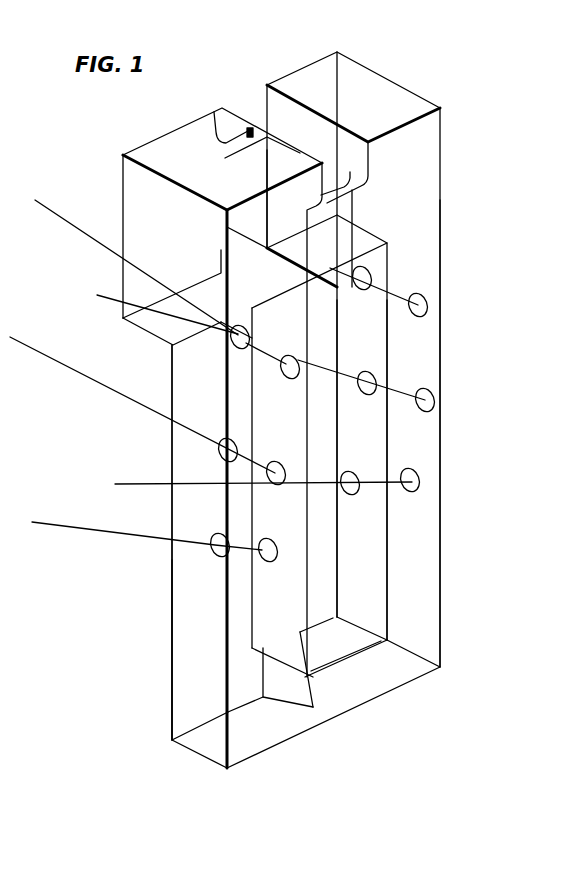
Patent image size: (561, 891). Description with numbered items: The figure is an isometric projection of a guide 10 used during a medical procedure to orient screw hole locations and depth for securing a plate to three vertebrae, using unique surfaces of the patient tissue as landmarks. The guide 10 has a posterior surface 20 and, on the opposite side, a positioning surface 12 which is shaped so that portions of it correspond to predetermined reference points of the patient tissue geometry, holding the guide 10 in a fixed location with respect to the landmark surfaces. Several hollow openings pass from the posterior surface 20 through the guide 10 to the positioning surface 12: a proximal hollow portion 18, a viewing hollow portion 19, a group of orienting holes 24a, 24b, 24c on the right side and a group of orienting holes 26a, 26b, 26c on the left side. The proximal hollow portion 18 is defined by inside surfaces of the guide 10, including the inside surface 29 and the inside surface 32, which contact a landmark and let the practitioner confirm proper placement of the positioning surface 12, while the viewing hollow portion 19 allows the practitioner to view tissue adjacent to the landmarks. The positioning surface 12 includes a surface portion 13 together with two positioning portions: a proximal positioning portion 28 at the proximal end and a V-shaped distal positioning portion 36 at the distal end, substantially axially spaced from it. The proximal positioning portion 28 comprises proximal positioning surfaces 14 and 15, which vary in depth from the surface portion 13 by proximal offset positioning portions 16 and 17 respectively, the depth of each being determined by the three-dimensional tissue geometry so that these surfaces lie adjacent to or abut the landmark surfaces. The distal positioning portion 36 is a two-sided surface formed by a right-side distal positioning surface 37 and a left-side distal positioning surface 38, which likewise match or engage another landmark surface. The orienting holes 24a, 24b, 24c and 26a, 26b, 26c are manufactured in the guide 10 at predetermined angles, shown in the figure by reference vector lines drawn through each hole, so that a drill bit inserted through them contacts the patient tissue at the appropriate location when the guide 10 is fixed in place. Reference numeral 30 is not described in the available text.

The guide 10 is at (453, 171).
The positioning surface 12 is at (103, 273).
The surface portion 13 is at (338, 432).
The proximal positioning surface 14 is at (130, 227).
The proximal positioning surface 15 is at (327, 92).
The proximal offset positioning portion 16 is at (150, 337).
The proximal offset positioning portion 17 is at (373, 238).
The proximal hollow portion 18 is at (350, 214).
The viewing hollow portion 19 is at (384, 438).
The posterior surface 20 is at (433, 232).
The orienting hole 24a is at (428, 302).
The orienting hole 24b is at (435, 399).
The orienting hole 24c is at (420, 478).
The orienting hole 26a is at (289, 380).
The orienting hole 26b is at (276, 486).
The orienting hole 26c is at (268, 563).
The proximal positioning portion 28 is at (252, 127).
The inside surface 29 is at (214, 112).
The lip 30 is at (220, 172).
The inside surface 32 is at (268, 208).
The distal positioning portion 36 is at (292, 702).
The right-side distal positioning surface 37 is at (315, 694).
The left-side distal positioning surface 38 is at (280, 688).